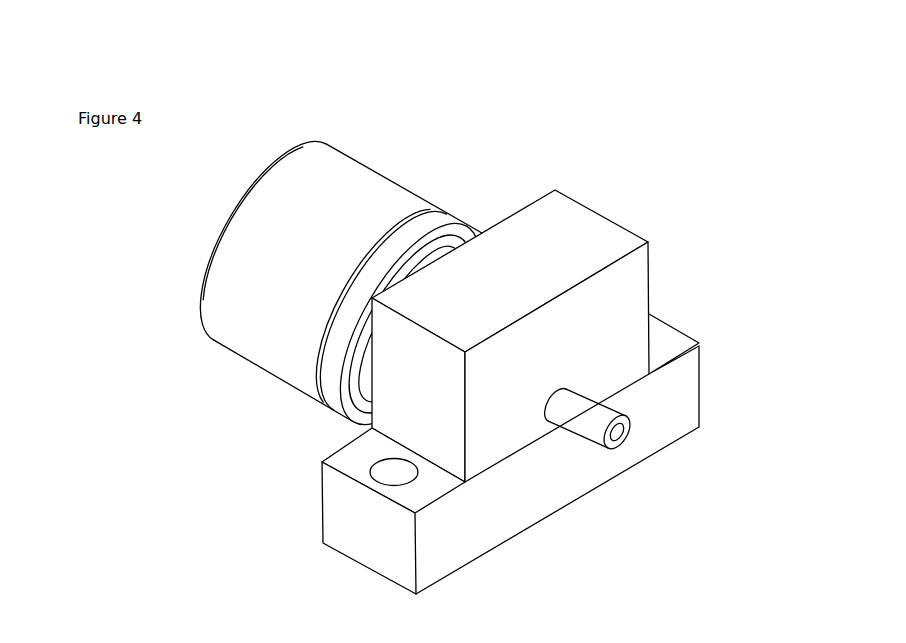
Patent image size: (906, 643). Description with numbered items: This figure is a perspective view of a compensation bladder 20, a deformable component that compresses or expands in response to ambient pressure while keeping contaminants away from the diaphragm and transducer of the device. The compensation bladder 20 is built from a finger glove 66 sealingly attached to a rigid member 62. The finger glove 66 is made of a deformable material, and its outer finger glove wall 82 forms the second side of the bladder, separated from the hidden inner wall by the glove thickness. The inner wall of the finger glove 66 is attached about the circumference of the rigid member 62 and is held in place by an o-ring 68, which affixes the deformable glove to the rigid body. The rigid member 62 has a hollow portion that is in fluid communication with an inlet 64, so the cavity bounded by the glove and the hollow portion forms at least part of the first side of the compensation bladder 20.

The compensation bladder 20 is at (424, 51).
The rigid member 62 is at (560, 235).
The inlet 64 is at (610, 448).
The finger glove 66 is at (332, 193).
The o-ring 68 is at (458, 222).
The outer finger glove wall 82 is at (250, 327).